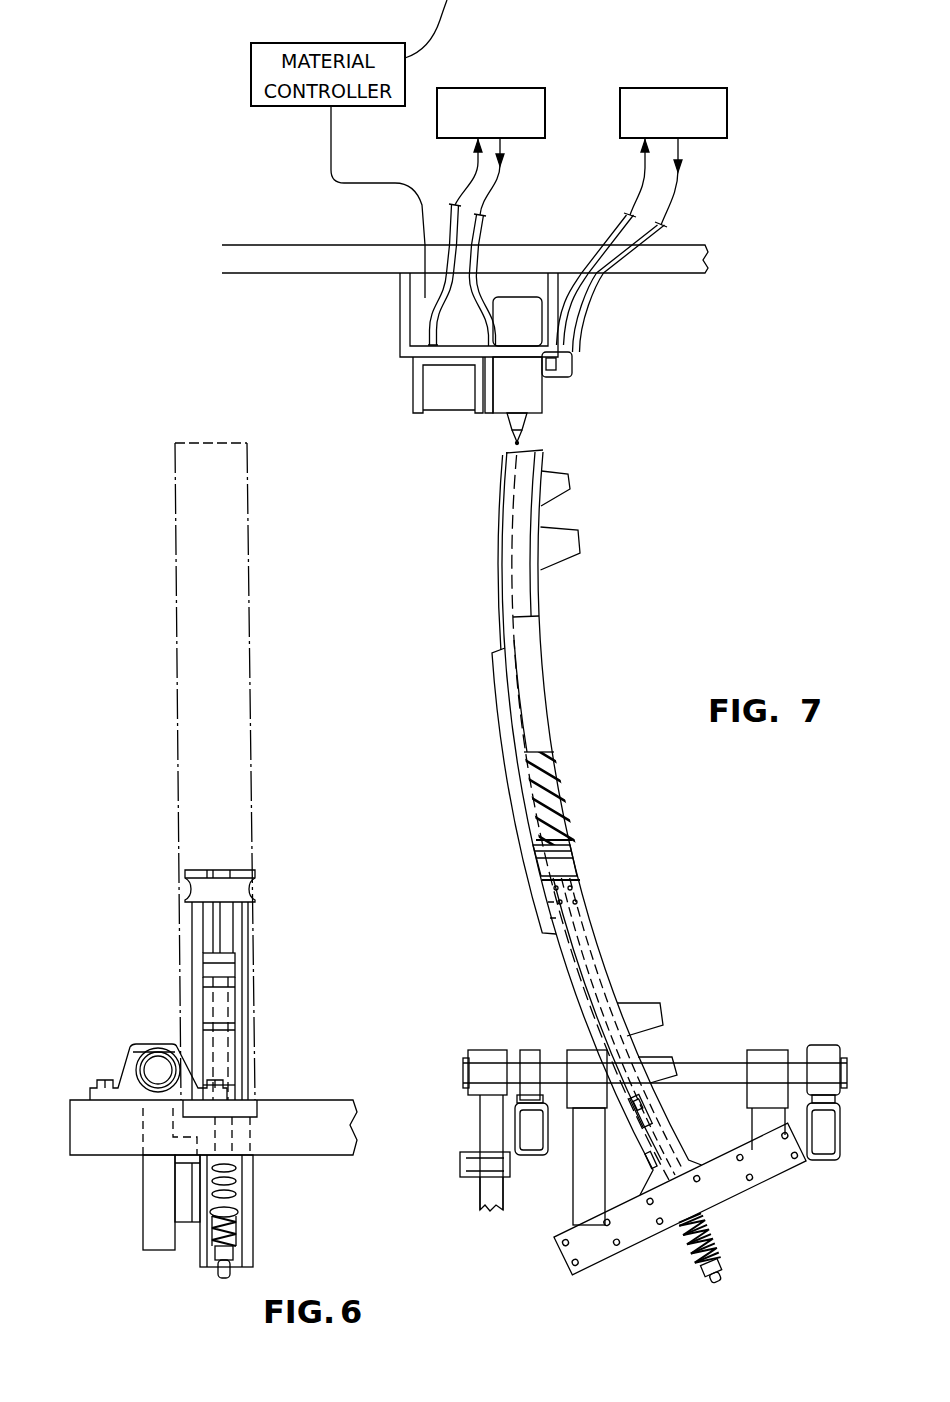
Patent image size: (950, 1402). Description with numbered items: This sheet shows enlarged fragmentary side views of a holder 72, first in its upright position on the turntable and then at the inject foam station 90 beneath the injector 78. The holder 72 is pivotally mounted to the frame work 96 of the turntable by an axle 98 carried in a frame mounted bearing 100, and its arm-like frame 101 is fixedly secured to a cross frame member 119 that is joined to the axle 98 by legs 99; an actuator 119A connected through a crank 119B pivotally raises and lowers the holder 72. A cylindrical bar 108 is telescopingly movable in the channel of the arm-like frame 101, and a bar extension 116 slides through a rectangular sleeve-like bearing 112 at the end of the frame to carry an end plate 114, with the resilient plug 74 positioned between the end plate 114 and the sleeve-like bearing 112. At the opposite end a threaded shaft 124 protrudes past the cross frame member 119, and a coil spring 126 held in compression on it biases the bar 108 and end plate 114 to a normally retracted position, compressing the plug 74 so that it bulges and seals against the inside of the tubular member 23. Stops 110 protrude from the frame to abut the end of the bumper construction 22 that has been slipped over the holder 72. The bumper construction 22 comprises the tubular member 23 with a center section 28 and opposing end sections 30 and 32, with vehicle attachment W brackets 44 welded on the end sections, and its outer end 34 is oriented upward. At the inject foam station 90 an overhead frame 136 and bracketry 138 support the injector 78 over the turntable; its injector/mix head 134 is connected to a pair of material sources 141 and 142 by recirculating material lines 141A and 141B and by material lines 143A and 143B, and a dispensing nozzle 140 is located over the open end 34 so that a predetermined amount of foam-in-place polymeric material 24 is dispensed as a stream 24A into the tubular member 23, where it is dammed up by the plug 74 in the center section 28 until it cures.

In FIG. 7, the bumper construction 22 is at (492, 576).
In FIG. 6, the bumper construction 22 is at (168, 616).
In FIG. 7, the tubular member 23 is at (540, 650).
In FIG. 7, the foam-in-place polymeric material 24 is at (558, 795).
In FIG. 7, the stream 24A is at (535, 616).
In FIG. 7, the center section 28 is at (500, 756).
In FIG. 7, the end section 30 is at (497, 537).
In FIG. 7, the end section 32 is at (556, 978).
In FIG. 7, the outer end 34 is at (542, 453).
In FIG. 7, the vehicle attachment W bracket 44 is at (580, 552).
In FIG. 6, the holder 72 is at (262, 928).
In FIG. 7, the plug 74 is at (575, 865).
In FIG. 6, the plug 74 is at (190, 885).
In FIG. 7, the injector 78 is at (548, 185).
In FIG. 7, the inject foam station 90 is at (758, 352).
In FIG. 6, the frame work 96 is at (105, 1156).
In FIG. 7, the axle 98 is at (700, 1060).
In FIG. 6, the axle 98 is at (157, 1068).
In FIG. 7, the leg 99 is at (755, 1120).
In FIG. 6, the leg 99 is at (143, 1200).
In FIG. 7, the frame mounted bearing 100 is at (822, 1046).
In FIG. 6, the frame mounted bearing 100 is at (125, 1080).
In FIG. 7, the arm-like frame 101 is at (600, 960).
In FIG. 6, the arm-like frame 101 is at (250, 988).
In FIG. 7, the cylindrical bar 108 is at (572, 940).
In FIG. 6, the cylindrical bar 108 is at (232, 1055).
In FIG. 7, the stop 110 is at (636, 1128).
In FIG. 7, the sleeve-like bearing 112 is at (570, 905).
In FIG. 6, the sleeve-like bearing 112 is at (205, 935).
In FIG. 7, the end plate 114 is at (565, 845).
In FIG. 6, the end plate 114 is at (232, 868).
In FIG. 7, the bar extension 116 is at (548, 900).
In FIG. 6, the bar extension 116 is at (213, 915).
In FIG. 7, the cross frame member 119 is at (655, 1252).
In FIG. 6, the cross frame member 119 is at (192, 1252).
In FIG. 7, the actuator 119A is at (502, 1200).
In FIG. 7, the crank 119B is at (480, 1113).
In FIG. 7, the threaded shaft 124 is at (726, 1274).
In FIG. 6, the threaded shaft 124 is at (220, 1280).
In FIG. 7, the coil spring 126 is at (722, 1225).
In FIG. 6, the coil spring 126 is at (236, 1228).
In FIG. 7, the injector/mix head 134 is at (483, 440).
In FIG. 7, the overhead frame 136 is at (295, 243).
In FIG. 7, the bracketry 138 is at (400, 318).
In FIG. 7, the dispensing nozzle 140 is at (525, 433).
In FIG. 7, the material source 141 is at (727, 105).
In FIG. 7, the recirculating material line 141A is at (595, 292).
In FIG. 7, the recirculating material line 141B is at (612, 228).
In FIG. 7, the material source 142 is at (545, 98).
In FIG. 7, the material line 143A is at (481, 232).
In FIG. 7, the material line 143B is at (450, 218).